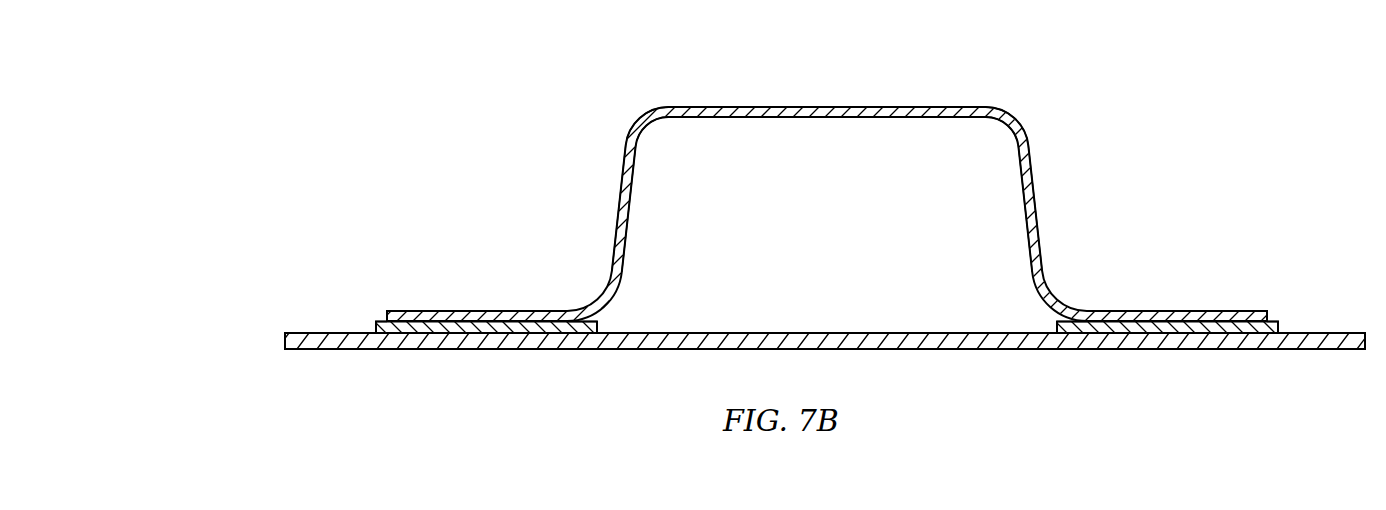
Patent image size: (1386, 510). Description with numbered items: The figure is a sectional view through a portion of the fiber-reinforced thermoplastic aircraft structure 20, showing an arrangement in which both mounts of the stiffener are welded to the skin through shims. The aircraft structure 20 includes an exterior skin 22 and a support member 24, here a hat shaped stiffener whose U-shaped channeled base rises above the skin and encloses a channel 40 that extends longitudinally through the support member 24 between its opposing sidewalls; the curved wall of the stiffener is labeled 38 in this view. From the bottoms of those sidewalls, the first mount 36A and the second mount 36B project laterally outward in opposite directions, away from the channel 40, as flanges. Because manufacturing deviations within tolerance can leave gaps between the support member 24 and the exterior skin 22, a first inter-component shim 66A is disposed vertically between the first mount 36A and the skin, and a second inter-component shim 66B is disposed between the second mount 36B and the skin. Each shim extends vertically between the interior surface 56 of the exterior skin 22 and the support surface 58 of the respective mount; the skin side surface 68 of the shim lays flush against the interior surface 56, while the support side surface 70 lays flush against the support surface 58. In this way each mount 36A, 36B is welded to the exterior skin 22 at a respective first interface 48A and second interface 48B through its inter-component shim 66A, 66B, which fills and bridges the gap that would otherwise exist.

The aircraft structure 20 is at (388, 139).
The exterior skin 22 is at (279, 369).
The support member 24 is at (990, 67).
The first mount 36A is at (481, 308).
The second mount 36B is at (1194, 306).
The membrane sheet 38 is at (1033, 131).
The channel 40 is at (824, 248).
The first interface 48A is at (412, 308).
The second interface 48B is at (1238, 299).
The interior surface 56 is at (903, 333).
The support surface 58 is at (557, 334).
The first inter-component shim 66A is at (366, 321).
The second inter-component shim 66B is at (1282, 323).
The skin side surface 68 is at (505, 334).
The support side surface 70 is at (530, 320).